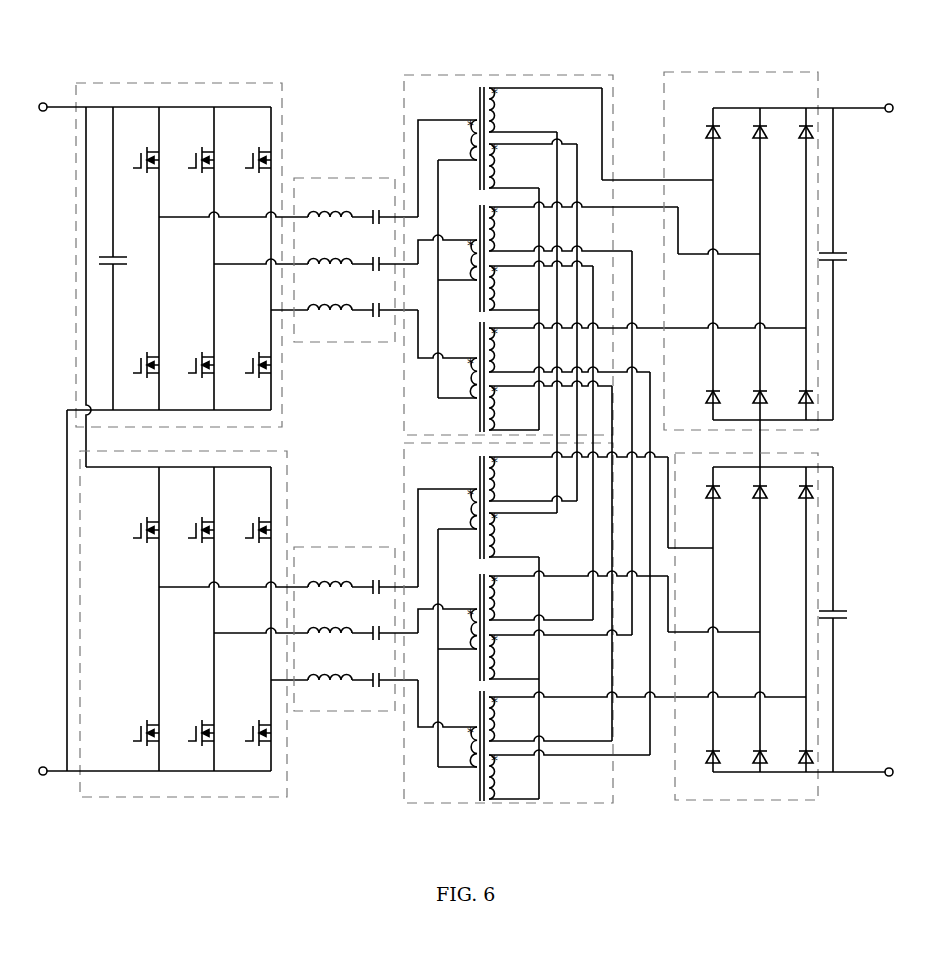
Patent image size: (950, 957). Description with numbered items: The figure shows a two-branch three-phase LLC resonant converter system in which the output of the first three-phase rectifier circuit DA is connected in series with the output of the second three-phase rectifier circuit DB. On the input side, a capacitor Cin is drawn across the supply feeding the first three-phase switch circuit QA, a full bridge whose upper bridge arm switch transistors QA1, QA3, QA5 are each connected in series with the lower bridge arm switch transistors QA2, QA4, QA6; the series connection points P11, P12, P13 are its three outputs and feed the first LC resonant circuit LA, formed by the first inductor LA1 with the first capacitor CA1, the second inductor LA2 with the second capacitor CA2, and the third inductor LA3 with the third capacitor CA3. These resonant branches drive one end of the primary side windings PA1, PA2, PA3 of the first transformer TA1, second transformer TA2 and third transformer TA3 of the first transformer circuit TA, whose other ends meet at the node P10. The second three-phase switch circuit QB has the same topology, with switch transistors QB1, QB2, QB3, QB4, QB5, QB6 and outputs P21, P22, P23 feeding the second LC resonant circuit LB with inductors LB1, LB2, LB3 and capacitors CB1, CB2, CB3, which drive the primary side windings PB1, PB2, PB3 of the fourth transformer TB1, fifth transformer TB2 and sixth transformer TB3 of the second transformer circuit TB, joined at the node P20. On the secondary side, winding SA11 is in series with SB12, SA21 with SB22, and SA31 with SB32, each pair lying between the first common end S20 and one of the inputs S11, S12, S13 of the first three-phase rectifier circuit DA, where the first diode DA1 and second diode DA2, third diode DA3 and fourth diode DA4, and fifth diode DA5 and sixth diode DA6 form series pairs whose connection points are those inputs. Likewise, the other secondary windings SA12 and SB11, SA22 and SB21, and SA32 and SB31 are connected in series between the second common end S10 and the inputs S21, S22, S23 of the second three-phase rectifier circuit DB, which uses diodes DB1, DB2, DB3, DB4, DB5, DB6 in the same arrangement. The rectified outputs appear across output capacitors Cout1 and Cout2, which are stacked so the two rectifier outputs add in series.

The first three-phase switch circuit QA is at (184, 83).
The second three-phase switch circuit QB is at (183, 798).
The first LC resonant circuit LA is at (343, 177).
The second LC resonant circuit LB is at (338, 712).
The first transformer circuit TA is at (507, 75).
The second transformer circuit TB is at (505, 804).
The first three-phase rectifier circuit DA is at (735, 70).
The second three-phase rectifier circuit DB is at (748, 800).
The input capacitor Cin is at (107, 258).
The first output capacitor Cout1 is at (857, 264).
The second output capacitor Cout2 is at (857, 619).
The first switch transistor QA1 is at (139, 150).
The second switch transistor QA2 is at (139, 354).
The third switch transistor QA3 is at (194, 150).
The fourth switch transistor QA4 is at (194, 354).
The fifth switch transistor QA5 is at (251, 150).
The sixth switch transistor QA6 is at (251, 354).
The switch QB1 is at (139, 520).
The switch QB2 is at (139, 723).
The switch QB3 is at (194, 520).
The switch QB4 is at (194, 723).
The switch QB5 is at (251, 520).
The switch QB6 is at (251, 723).
The first bridge midpoint node P11 is at (219, 218).
The first bridge midpoint node P12 is at (243, 265).
The first bridge midpoint node P13 is at (271, 311).
The node P10 is at (424, 279).
The second bridge midpoint node P21 is at (217, 588).
The second bridge midpoint node P22 is at (243, 635).
The second bridge midpoint node P23 is at (272, 681).
The node P20 is at (424, 648).
The first inductor LA1 is at (330, 204).
The second inductor LA2 is at (330, 252).
The third inductor LA3 is at (330, 297).
The first capacitor CA1 is at (385, 208).
The second capacitor CA2 is at (385, 255).
The third capacitor CA3 is at (385, 301).
The resonant inductor LB1 is at (330, 574).
The resonant inductor LB2 is at (330, 621).
The resonant inductor LB3 is at (330, 667).
The resonant capacitor CB1 is at (385, 577).
The resonant capacitor CB2 is at (385, 624).
The resonant capacitor CB3 is at (385, 670).
The first transformer TA1 is at (466, 138).
The second transformer TA2 is at (466, 258).
The third transformer TA3 is at (466, 377).
The fourth transformer TB1 is at (466, 507).
The fifth transformer TB2 is at (466, 627).
The sixth transformer TB3 is at (466, 746).
The primary side winding PA1 is at (447, 167).
The primary side winding PA2 is at (447, 257).
The primary side winding PA3 is at (447, 354).
The primary side winding PB1 is at (447, 536).
The primary side winding PB2 is at (447, 626).
The primary side winding PB3 is at (447, 723).
The secondary side winding SA11 is at (545, 108).
The secondary side winding SA12 is at (533, 163).
The secondary side winding SA21 is at (583, 226).
The secondary side winding SA22 is at (541, 285).
The secondary side winding SA31 is at (569, 348).
The secondary side winding SA32 is at (550, 405).
The secondary side winding SB11 is at (578, 476).
The secondary side winding SB12 is at (523, 533).
The secondary side winding SB21 is at (578, 595).
The secondary side winding SB22 is at (560, 654).
The secondary side winding SB31 is at (550, 717).
The secondary side winding SB32 is at (569, 774).
The second common end S10 is at (589, 317).
The first rectifier input node S11 is at (657, 189).
The first rectifier input node S12 is at (719, 246).
The first rectifier input node S13 is at (748, 319).
The first common end S20 is at (589, 684).
The second rectifier input node S21 is at (690, 557).
The second rectifier input node S22 is at (714, 624).
The second rectifier input node S23 is at (748, 688).
The first diode DA1 is at (700, 143).
The second diode DA2 is at (700, 387).
The third diode DA3 is at (747, 143).
The fourth diode DA4 is at (747, 387).
The fifth diode DA5 is at (793, 143).
The sixth diode DA6 is at (793, 387).
The rectifier diode DB1 is at (700, 503).
The rectifier diode DB2 is at (700, 749).
The rectifier diode DB3 is at (747, 503).
The rectifier diode DB4 is at (747, 749).
The rectifier diode DB5 is at (793, 503).
The rectifier diode DB6 is at (793, 749).